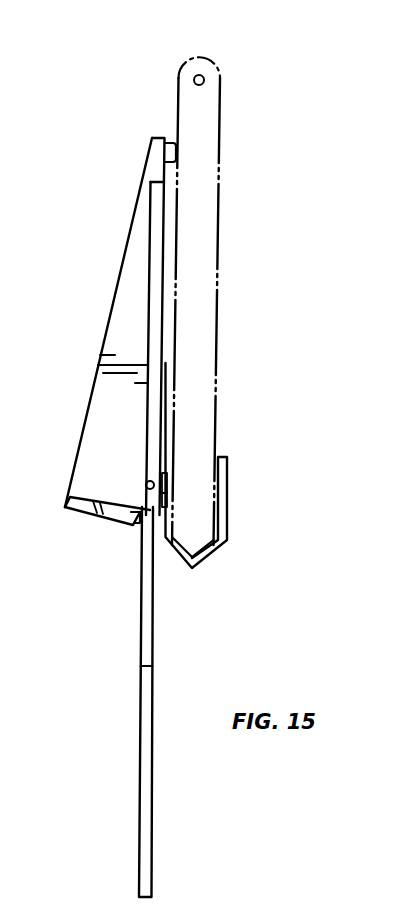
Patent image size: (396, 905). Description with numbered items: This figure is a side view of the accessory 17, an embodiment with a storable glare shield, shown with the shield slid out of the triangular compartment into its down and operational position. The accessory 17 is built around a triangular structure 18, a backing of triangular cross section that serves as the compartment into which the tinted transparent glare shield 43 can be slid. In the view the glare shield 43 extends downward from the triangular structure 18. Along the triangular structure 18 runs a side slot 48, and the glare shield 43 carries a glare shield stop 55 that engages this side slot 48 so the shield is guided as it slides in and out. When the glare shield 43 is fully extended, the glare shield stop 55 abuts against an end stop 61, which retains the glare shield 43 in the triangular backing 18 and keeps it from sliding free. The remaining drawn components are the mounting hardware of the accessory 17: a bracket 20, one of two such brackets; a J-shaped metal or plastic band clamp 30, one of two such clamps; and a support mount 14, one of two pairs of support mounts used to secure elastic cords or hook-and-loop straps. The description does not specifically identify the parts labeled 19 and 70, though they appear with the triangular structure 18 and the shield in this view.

The support mounts 14 is at (171, 140).
The accessory 17 is at (276, 193).
The triangular structure 18 is at (105, 336).
The bracket base 19 is at (93, 516).
The bracket 20 is at (137, 463).
The J-shaped band clamp 30 is at (218, 543).
The glare shield 43 is at (140, 788).
The side slot 48 is at (148, 252).
The glare shield stop 55 is at (147, 476).
The end stop 61 is at (129, 518).
The tube 70 is at (220, 146).